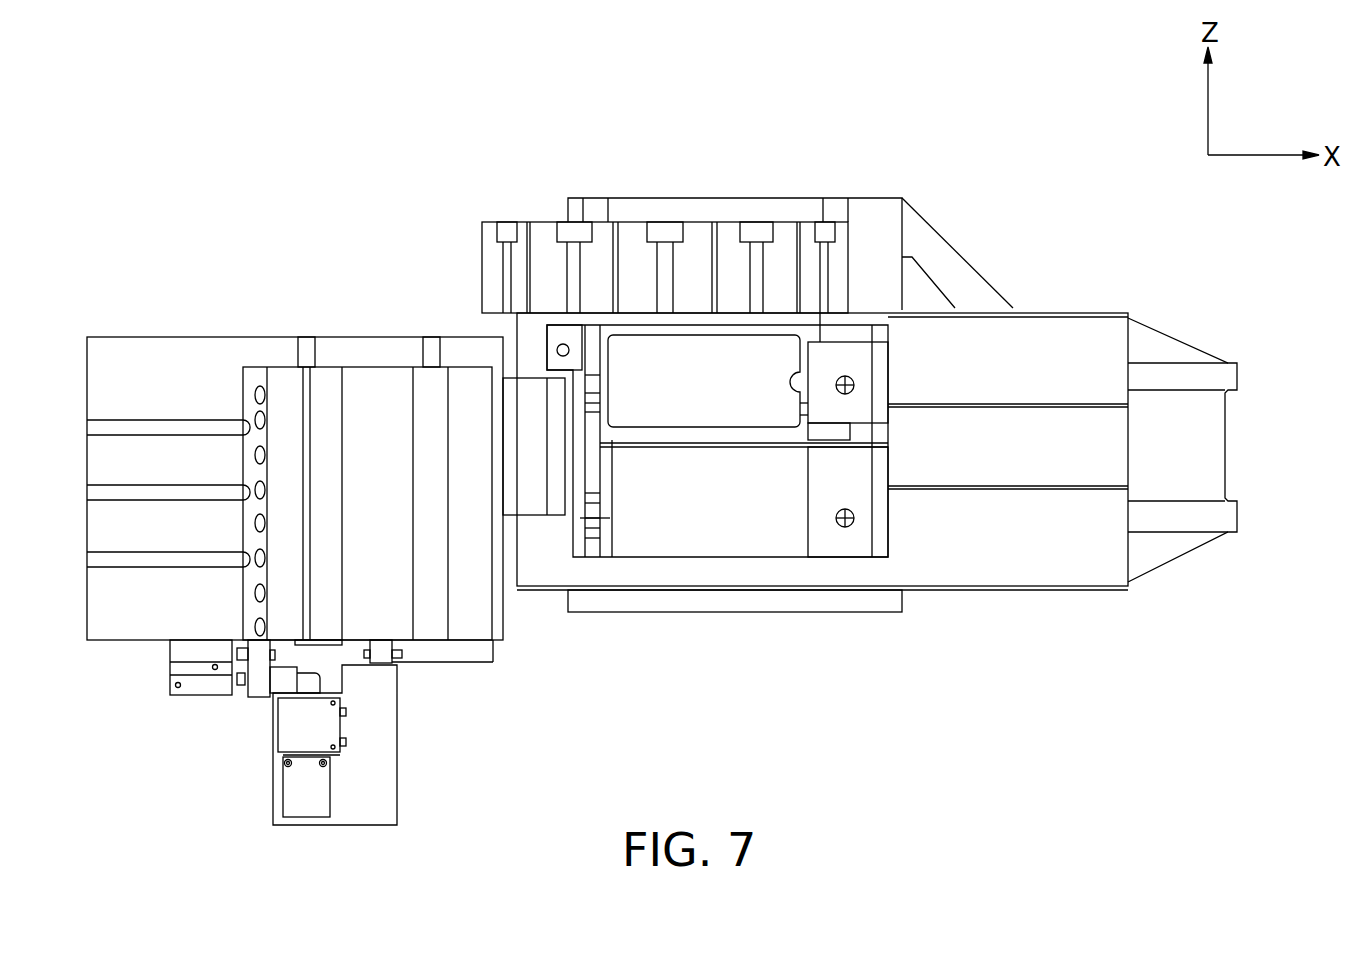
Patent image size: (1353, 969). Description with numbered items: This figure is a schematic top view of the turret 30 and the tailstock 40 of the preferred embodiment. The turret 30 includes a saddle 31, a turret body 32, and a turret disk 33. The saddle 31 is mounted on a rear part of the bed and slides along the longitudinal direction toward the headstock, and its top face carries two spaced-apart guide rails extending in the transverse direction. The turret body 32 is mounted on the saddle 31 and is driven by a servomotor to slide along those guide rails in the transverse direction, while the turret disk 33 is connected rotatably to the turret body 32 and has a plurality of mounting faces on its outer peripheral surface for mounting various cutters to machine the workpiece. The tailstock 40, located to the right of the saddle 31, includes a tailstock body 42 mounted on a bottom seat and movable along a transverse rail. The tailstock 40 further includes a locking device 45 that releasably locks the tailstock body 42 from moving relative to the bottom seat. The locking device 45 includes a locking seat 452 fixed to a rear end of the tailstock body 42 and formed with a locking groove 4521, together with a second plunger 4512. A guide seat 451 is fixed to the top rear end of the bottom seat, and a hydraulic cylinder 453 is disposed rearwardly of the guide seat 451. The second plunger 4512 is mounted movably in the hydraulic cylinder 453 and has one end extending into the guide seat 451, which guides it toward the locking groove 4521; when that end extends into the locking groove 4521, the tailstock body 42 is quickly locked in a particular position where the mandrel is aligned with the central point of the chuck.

The turret 30 is at (1012, 232).
The saddle 31 is at (1070, 330).
The turret body 32 is at (732, 543).
The turret disk 33 is at (697, 235).
The tailstock 40 is at (228, 320).
The tailstock body 42 is at (372, 380).
The locking device 45 is at (397, 793).
The guide seat 451 is at (323, 728).
The second plunger 4512 is at (303, 700).
The locking seat 452 is at (352, 657).
The locking groove 4521 is at (305, 680).
The hydraulic cylinder 453 is at (302, 793).